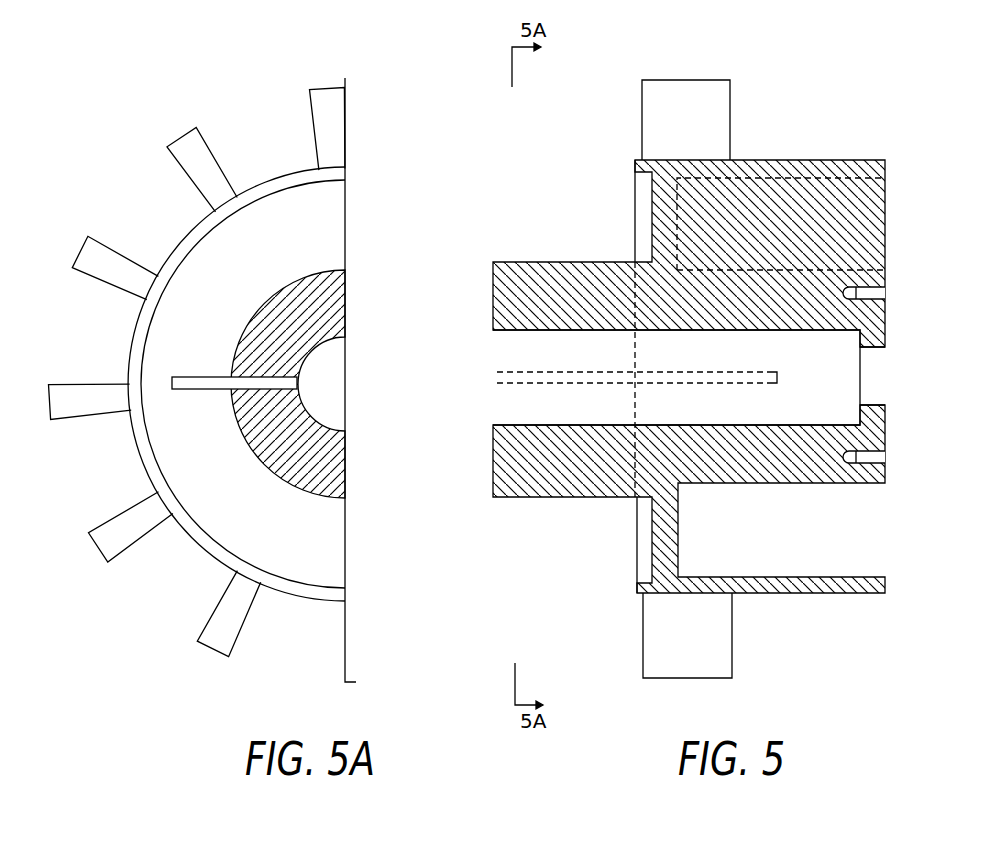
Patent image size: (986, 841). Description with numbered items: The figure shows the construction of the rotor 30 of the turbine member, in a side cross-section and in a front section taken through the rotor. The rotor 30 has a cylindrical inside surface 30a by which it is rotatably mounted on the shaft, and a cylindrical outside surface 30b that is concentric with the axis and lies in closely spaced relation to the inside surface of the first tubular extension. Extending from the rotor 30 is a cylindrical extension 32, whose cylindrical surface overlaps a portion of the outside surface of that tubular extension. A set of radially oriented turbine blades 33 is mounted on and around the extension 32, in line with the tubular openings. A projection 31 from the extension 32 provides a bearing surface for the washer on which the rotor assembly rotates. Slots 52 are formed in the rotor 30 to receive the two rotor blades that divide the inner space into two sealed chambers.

In FIG. 5A, the rotor 30 is at (330, 447).
In FIG. 5, the rotor 30 is at (512, 292).
In FIG. 5, the cylindrical inside surface 30a is at (520, 333).
In FIG. 5, the cylindrical outside surface 30b is at (533, 260).
In FIG. 5, the projection 31 is at (872, 415).
In FIG. 5, the cylindrical extension 32 is at (818, 467).
In FIG. 5A, the turbine blades 33 is at (333, 122).
In FIG. 5, the turbine blades 33 is at (710, 101).
In FIG. 5A, the slots 52 is at (186, 386).
In FIG. 5, the slots 52 is at (533, 376).